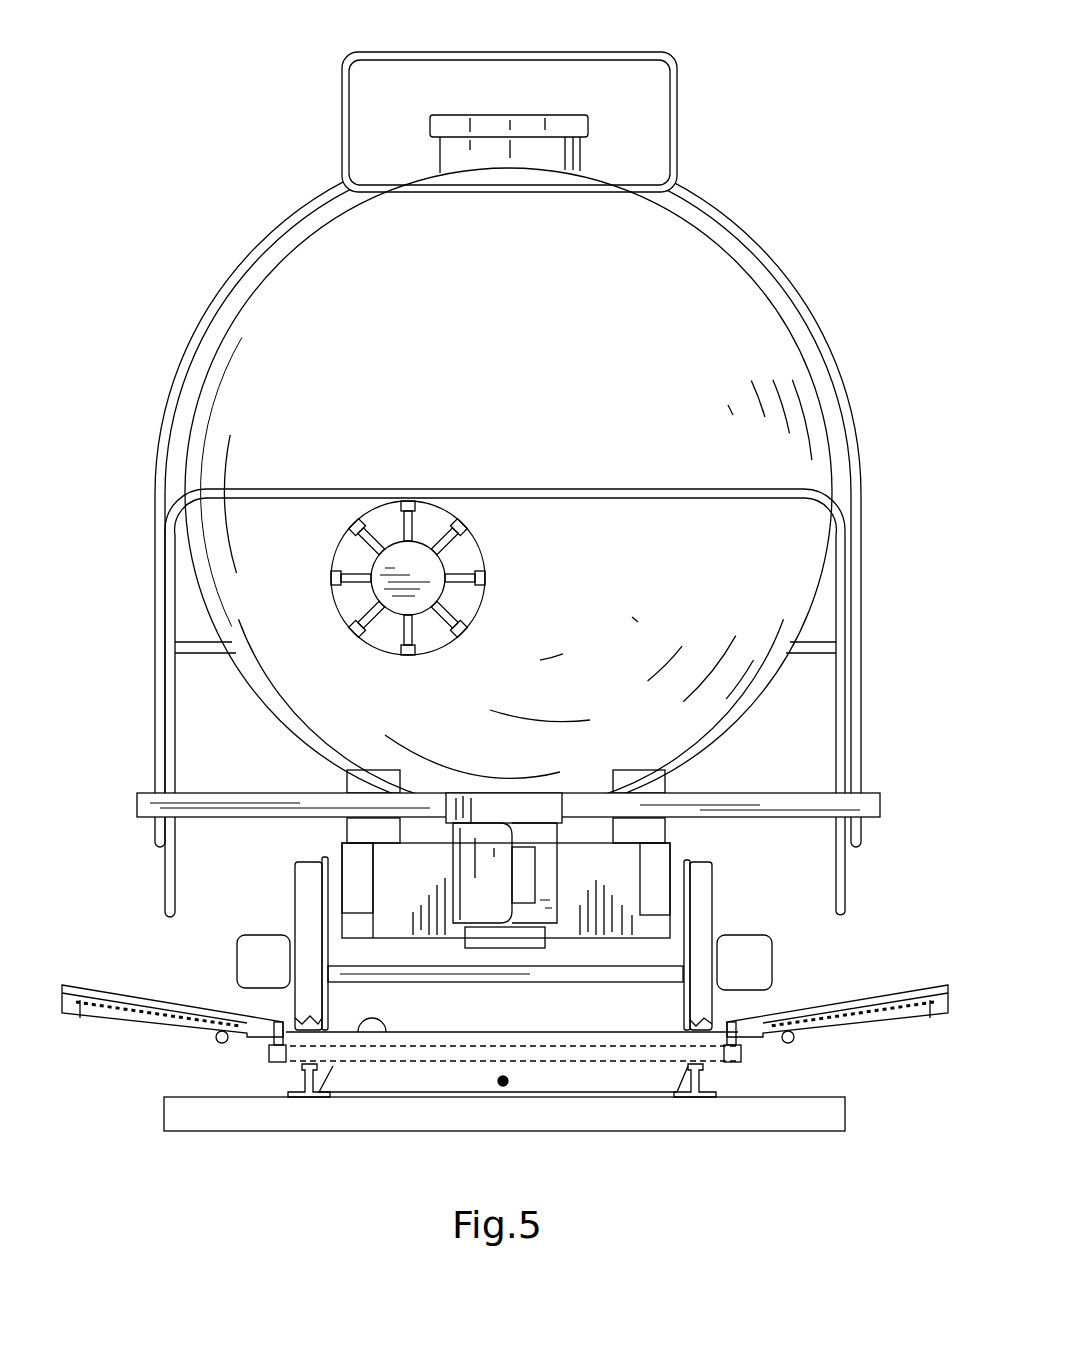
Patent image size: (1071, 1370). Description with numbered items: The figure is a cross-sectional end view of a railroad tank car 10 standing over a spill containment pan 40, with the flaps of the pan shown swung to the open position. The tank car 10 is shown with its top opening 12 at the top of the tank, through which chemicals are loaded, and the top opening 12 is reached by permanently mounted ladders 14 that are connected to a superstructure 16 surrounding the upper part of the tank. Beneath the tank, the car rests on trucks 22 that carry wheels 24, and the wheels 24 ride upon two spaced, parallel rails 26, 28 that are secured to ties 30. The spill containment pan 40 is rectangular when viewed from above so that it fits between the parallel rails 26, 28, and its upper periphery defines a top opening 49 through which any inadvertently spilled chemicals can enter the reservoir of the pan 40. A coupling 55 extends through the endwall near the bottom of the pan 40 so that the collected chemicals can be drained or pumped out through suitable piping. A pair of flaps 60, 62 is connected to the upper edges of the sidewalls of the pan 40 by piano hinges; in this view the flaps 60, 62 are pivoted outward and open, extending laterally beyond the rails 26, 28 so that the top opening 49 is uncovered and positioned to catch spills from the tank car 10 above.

The railroad tank car 10 is at (736, 158).
The top opening 12 is at (532, 116).
The permanently mounted ladders 14 is at (792, 258).
The superstructure 16 is at (540, 52).
The trucks 22 is at (407, 963).
The wheels 24 is at (307, 885).
The rail 26 is at (705, 1083).
The rail 28 is at (297, 1085).
The ties 30 is at (637, 1118).
The spill containment pan 40 is at (505, 979).
The top opening 49 is at (385, 1040).
The coupling 55 is at (510, 1088).
The flap 60 is at (883, 1000).
The flap 62 is at (122, 997).